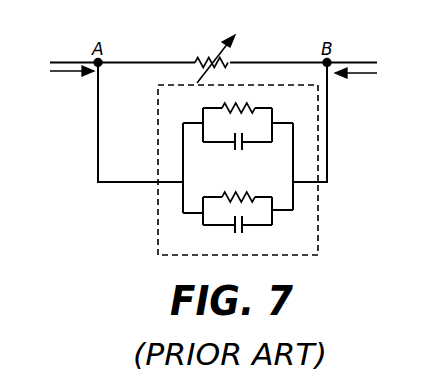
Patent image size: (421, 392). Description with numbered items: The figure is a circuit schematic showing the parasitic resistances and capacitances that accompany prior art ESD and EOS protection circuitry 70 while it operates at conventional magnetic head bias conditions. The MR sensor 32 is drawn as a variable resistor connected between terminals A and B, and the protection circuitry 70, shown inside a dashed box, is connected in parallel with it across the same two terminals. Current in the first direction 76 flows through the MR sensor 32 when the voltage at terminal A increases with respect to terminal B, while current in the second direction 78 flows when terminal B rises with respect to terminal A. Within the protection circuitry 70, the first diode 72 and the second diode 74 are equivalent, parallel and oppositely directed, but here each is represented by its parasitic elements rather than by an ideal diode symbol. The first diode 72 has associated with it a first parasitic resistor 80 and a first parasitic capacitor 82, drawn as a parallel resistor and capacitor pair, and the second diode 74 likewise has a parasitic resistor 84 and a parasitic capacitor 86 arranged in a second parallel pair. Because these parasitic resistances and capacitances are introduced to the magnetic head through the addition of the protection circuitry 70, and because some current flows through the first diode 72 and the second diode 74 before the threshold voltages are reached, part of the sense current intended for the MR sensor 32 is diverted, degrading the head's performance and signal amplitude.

The MR sensor 32 is at (229, 59).
The ESD and EOS protection circuitry 70 is at (158, 207).
The first diode 72 is at (246, 128).
The second diode 74 is at (249, 209).
The first direction 76 is at (70, 83).
The second direction 78 is at (356, 86).
The first parasitic resistor 80 is at (227, 106).
The first parasitic capacitor 82 is at (250, 143).
The first parasitic resistor 84 is at (232, 192).
The first parasitic capacitor 86 is at (227, 229).